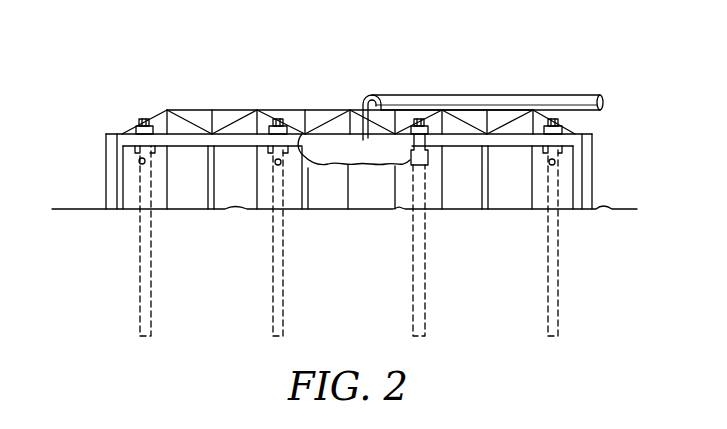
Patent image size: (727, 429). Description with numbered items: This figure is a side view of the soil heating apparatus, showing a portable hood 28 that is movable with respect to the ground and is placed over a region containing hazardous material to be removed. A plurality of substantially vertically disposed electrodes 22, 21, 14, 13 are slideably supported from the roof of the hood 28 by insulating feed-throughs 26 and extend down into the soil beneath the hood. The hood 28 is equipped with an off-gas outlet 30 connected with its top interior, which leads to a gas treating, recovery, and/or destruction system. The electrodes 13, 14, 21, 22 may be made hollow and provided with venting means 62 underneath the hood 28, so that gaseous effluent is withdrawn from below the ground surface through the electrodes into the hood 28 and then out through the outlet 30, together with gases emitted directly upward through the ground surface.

The electrode 13 is at (562, 265).
The electrode 14 is at (425, 323).
The electrode 21 is at (284, 260).
The electrode 22 is at (151, 263).
The insulating feed-through 26 is at (407, 136).
The portable hood 28 is at (593, 180).
The off-gas outlet 30 is at (590, 95).
The venting means 62 is at (139, 162).